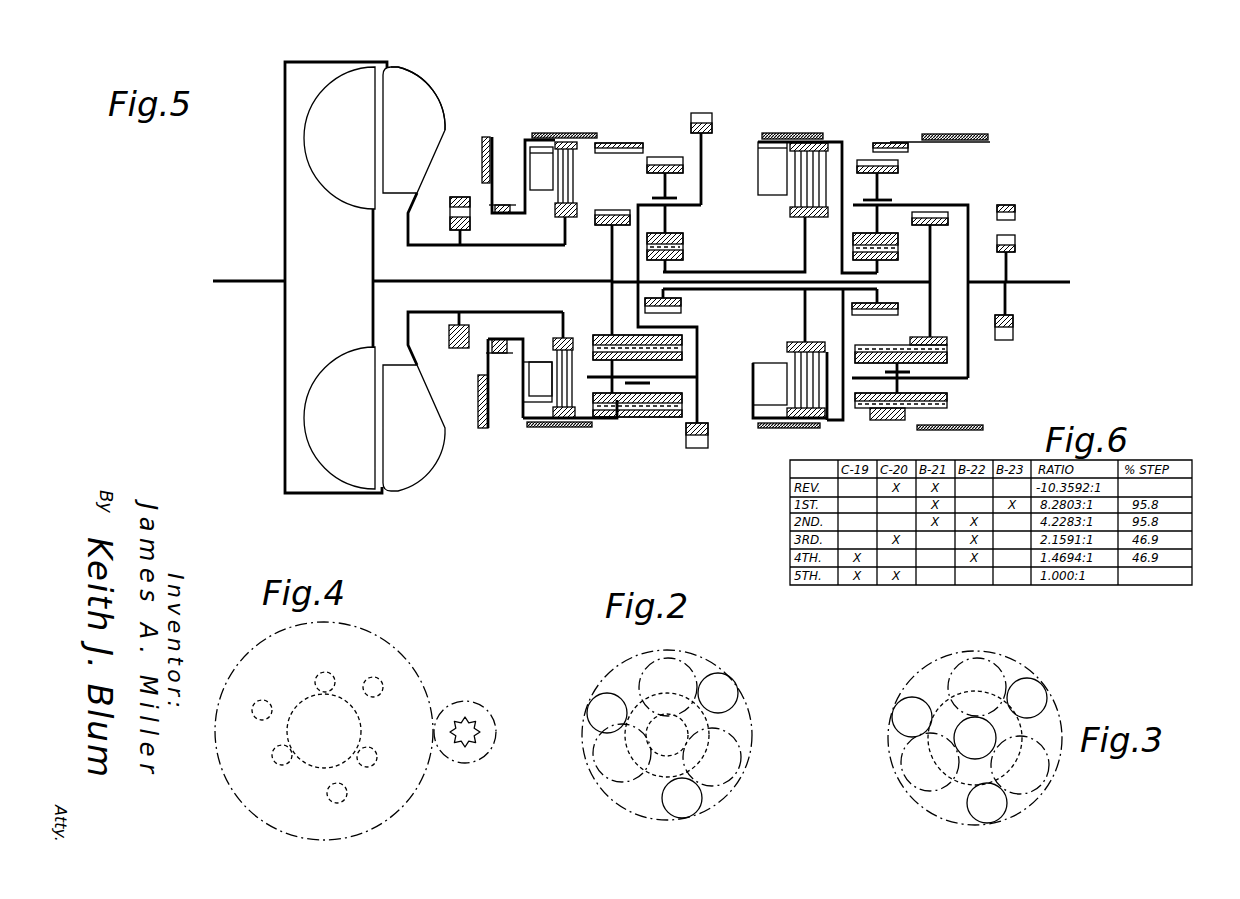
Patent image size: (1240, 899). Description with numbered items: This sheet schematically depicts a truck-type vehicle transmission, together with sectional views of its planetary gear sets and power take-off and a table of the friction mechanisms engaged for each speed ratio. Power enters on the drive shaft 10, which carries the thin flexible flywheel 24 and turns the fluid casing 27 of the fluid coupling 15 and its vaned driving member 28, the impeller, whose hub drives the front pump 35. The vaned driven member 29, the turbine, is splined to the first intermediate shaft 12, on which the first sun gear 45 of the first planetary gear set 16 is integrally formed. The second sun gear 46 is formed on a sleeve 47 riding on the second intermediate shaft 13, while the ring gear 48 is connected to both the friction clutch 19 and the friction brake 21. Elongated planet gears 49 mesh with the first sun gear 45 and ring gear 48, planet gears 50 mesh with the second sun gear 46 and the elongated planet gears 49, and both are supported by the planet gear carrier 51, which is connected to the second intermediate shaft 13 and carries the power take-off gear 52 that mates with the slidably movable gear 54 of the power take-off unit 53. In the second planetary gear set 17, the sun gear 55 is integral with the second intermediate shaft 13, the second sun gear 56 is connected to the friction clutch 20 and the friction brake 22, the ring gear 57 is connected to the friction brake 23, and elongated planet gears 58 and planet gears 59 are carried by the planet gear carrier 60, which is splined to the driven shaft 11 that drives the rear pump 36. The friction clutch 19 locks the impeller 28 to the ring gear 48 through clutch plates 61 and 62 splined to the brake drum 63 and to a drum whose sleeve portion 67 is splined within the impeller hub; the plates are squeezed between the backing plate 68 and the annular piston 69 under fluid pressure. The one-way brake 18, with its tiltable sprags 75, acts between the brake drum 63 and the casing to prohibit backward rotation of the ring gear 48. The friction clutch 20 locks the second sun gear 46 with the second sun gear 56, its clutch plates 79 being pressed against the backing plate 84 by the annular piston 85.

In FIG. 5, the drive shaft 10 is at (258, 280).
In FIG. 5, the driven shaft 11 is at (1048, 281).
In FIG. 5, the first intermediate shaft 12 is at (445, 280).
In FIG. 5, the second intermediate shaft 13 is at (728, 290).
In FIG. 5, the fluid coupling 15 is at (447, 97).
In FIG. 5, the first planetary gear set 16 is at (651, 150).
In FIG. 5, the second planetary gear set 17 is at (868, 150).
In FIG. 5, the one-way brake 18 is at (504, 218).
In FIG. 5, the friction clutch 19 is at (570, 226).
In FIG. 5, the friction clutch 20 is at (785, 205).
In FIG. 5, the friction brake 21 is at (548, 131).
In FIG. 5, the friction brake 22 is at (794, 131).
In FIG. 5, the friction brake 23 is at (955, 132).
In FIG. 5, the flywheel 24 is at (285, 175).
In FIG. 5, the fluid casing 27 is at (404, 69).
In FIG. 5, the vaned driving member 28 is at (414, 279).
In FIG. 5, the vaned driven member 29 is at (339, 278).
In FIG. 5, the front pump 35 is at (460, 195).
In FIG. 5, the rear pump 36 is at (1010, 203).
In FIG. 5, the first sun gear 45 is at (614, 208).
In FIG. 2, the first sun gear 45 is at (712, 731).
In FIG. 5, the second sun gear 46 is at (683, 311).
In FIG. 2, the second sun gear 46 is at (658, 726).
In FIG. 5, the sleeve 47 is at (780, 272).
In FIG. 5, the ring gear 48 is at (619, 158).
In FIG. 2, the ring gear 48 is at (725, 798).
In FIG. 5, the elongated planet gears 49 is at (681, 405).
In FIG. 2, the elongated planet gears 49 is at (718, 675).
In FIG. 5, the planet gears 50 is at (668, 162).
In FIG. 2, the planet gears 50 is at (650, 665).
In FIG. 5, the planet gear carrier 51 is at (687, 208).
In FIG. 5, the power take-off gear 52 is at (705, 113).
In FIG. 4, the power take-off gear 52 is at (405, 658).
In FIG. 4, the power take-off unit 53 is at (470, 700).
In FIG. 4, the slidably movable gear 54 is at (475, 760).
In FIG. 5, the sun gear 55 is at (940, 212).
In FIG. 3, the sun gear 55 is at (930, 700).
In FIG. 5, the second sun gear 56 is at (898, 311).
In FIG. 3, the second sun gear 56 is at (1000, 730).
In FIG. 5, the ring gear 57 is at (908, 150).
In FIG. 3, the ring gear 57 is at (928, 675).
In FIG. 5, the elongated planet gears 58 is at (890, 350).
In FIG. 3, the elongated planet gears 58 is at (1027, 678).
In FIG. 5, the planet gears 59 is at (898, 166).
In FIG. 3, the planet gears 59 is at (977, 658).
In FIG. 5, the planet gear carrier 60 is at (966, 265).
In FIG. 5, the clutch plates 61 is at (552, 392).
In FIG. 5, the clutch plates 62 is at (558, 368).
In FIG. 5, the brake drum 63 is at (526, 138).
In FIG. 5, the sleeve portion 67 is at (492, 246).
In FIG. 5, the backing plate 68 is at (573, 360).
In FIG. 5, the annular piston 69 is at (541, 168).
In FIG. 5, the tiltable sprags 75 is at (800, 416).
In FIG. 5, the clutch plates 79 is at (790, 372).
In FIG. 5, the backing plate 84 is at (828, 190).
In FIG. 5, the annular piston 85 is at (772, 168).